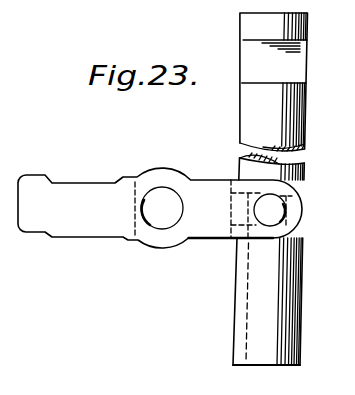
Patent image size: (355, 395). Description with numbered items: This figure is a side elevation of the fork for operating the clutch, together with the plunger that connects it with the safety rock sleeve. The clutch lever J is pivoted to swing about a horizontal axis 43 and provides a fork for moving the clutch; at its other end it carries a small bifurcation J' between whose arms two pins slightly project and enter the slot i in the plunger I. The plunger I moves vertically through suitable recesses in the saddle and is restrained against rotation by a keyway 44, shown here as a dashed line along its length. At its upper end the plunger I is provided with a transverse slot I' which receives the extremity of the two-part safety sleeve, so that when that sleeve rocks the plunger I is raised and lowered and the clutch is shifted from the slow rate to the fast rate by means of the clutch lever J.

The horizontal axis 43 is at (158, 193).
The keyway 44 is at (244, 318).
The clutch lever J is at (160, 219).
The eye of arm J' is at (261, 230).
The slot i is at (302, 214).
The plunger I is at (272, 259).
The transverse slot I' is at (287, 82).